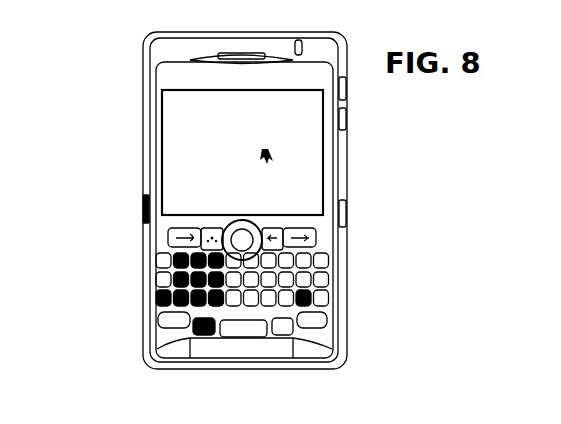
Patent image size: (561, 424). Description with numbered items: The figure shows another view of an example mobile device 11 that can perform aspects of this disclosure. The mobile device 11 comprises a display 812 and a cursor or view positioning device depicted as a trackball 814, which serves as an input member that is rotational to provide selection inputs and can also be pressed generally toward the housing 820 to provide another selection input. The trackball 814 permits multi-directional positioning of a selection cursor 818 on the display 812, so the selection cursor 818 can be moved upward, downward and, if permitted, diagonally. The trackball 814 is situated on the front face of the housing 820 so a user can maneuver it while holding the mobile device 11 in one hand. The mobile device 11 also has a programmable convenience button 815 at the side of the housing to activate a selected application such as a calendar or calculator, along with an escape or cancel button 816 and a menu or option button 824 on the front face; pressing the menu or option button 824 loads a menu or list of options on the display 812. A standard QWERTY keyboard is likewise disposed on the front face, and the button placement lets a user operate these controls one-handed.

The mobile device 11 is at (274, 19).
The display 812 is at (222, 125).
The trackball 814 is at (258, 214).
The programmable convenience button 815 is at (143, 203).
The escape or cancel button 816 is at (291, 214).
The selection cursor 818 is at (290, 140).
The housing 820 is at (163, 349).
The menu or option button 824 is at (207, 218).